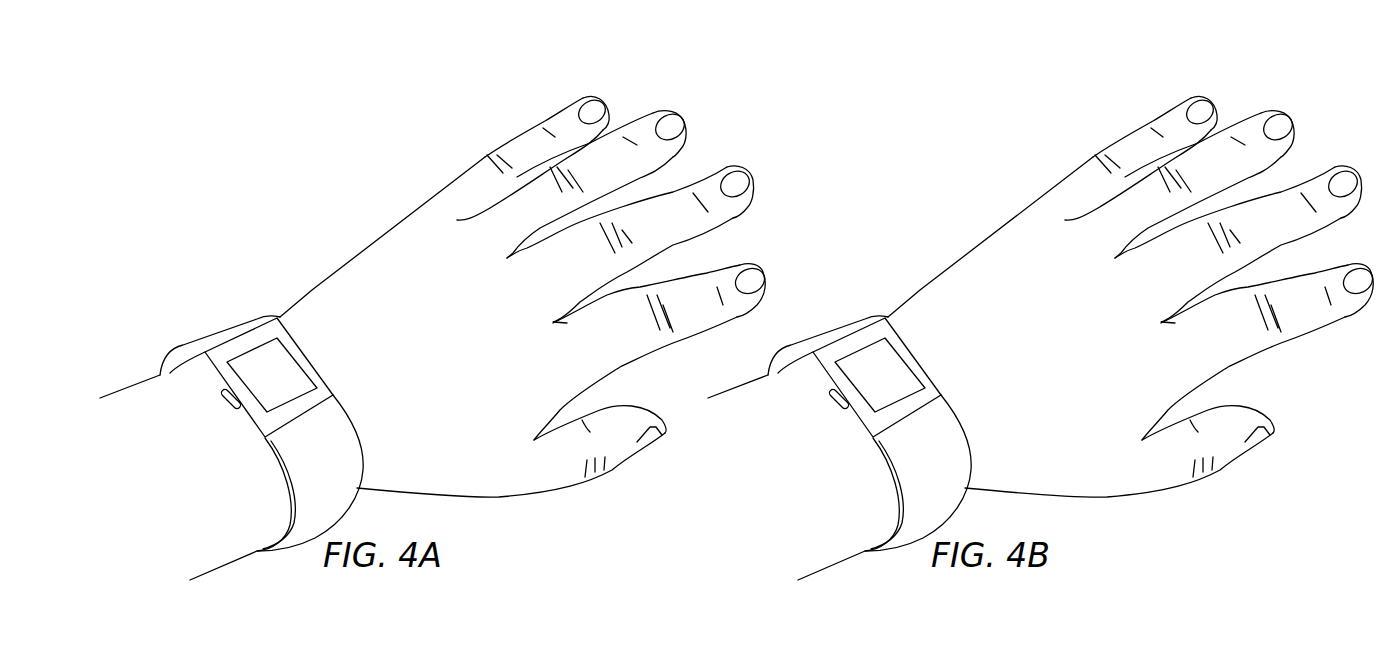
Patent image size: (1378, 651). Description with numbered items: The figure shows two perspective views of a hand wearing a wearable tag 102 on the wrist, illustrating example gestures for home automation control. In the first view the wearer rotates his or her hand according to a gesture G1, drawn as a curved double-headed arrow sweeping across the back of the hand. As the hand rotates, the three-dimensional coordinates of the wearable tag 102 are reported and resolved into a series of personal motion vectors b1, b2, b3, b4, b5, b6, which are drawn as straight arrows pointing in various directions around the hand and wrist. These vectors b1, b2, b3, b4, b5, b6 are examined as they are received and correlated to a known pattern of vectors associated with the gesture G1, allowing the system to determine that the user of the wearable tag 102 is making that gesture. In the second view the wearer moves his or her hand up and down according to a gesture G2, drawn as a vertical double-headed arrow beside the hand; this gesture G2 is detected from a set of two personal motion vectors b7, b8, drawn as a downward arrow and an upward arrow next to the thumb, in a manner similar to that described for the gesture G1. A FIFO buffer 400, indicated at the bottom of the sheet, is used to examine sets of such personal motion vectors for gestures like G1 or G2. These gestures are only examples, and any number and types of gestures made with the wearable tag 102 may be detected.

In FIG. 4A, the wearable tag 102 is at (283, 386).
In FIG. 4B, the wearable tag 102 is at (869, 433).
In FIG. 4A, the FIFO buffer 400 is at (600, 650).
In FIG. 4A, the personal motion vector b1 is at (336, 247).
In FIG. 4A, the personal motion vector b2 is at (449, 358).
In FIG. 4A, the personal motion vector b3 is at (465, 395).
In FIG. 4A, the personal motion vector b4 is at (407, 527).
In FIG. 4A, the personal motion vector b5 is at (338, 321).
In FIG. 4A, the personal motion vector b6 is at (295, 292).
In FIG. 4B, the personal motion vector b7 is at (1295, 397).
In FIG. 4B, the personal motion vector b8 is at (1337, 527).
In FIG. 4A, the gesture G1 is at (565, 518).
In FIG. 4B, the gesture G2 is at (902, 151).